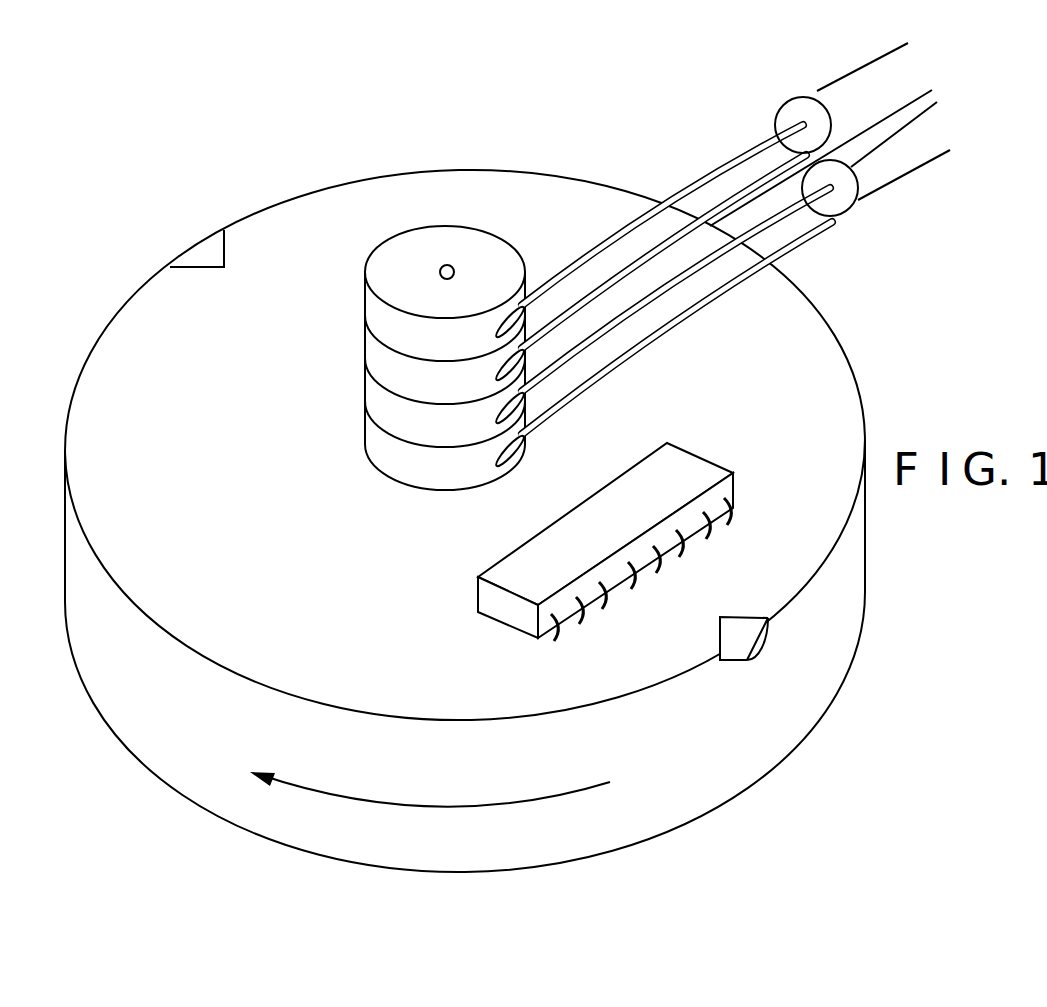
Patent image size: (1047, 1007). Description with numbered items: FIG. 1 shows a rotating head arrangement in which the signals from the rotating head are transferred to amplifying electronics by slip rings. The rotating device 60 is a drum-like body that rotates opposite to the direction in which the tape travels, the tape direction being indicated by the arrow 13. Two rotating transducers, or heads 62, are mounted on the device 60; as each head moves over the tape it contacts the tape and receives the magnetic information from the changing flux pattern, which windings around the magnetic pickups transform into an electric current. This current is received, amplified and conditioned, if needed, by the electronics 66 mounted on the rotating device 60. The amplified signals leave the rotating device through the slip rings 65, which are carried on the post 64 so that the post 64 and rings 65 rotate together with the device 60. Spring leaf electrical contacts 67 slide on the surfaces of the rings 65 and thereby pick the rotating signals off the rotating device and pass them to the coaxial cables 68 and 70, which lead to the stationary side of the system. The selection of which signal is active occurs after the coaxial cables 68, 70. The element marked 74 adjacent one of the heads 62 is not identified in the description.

The arrow 13 is at (430, 786).
The rotating device 60 is at (323, 160).
The rotating transducers, or heads 62 is at (205, 239).
The post 64 is at (440, 272).
The slip rings 65 is at (365, 401).
The electronics 66 is at (574, 554).
The spring leaf electrical contacts 67 is at (633, 360).
The coaxial cable 68 is at (885, 168).
The coaxial cable 70 is at (833, 93).
The sensor 74 is at (750, 631).